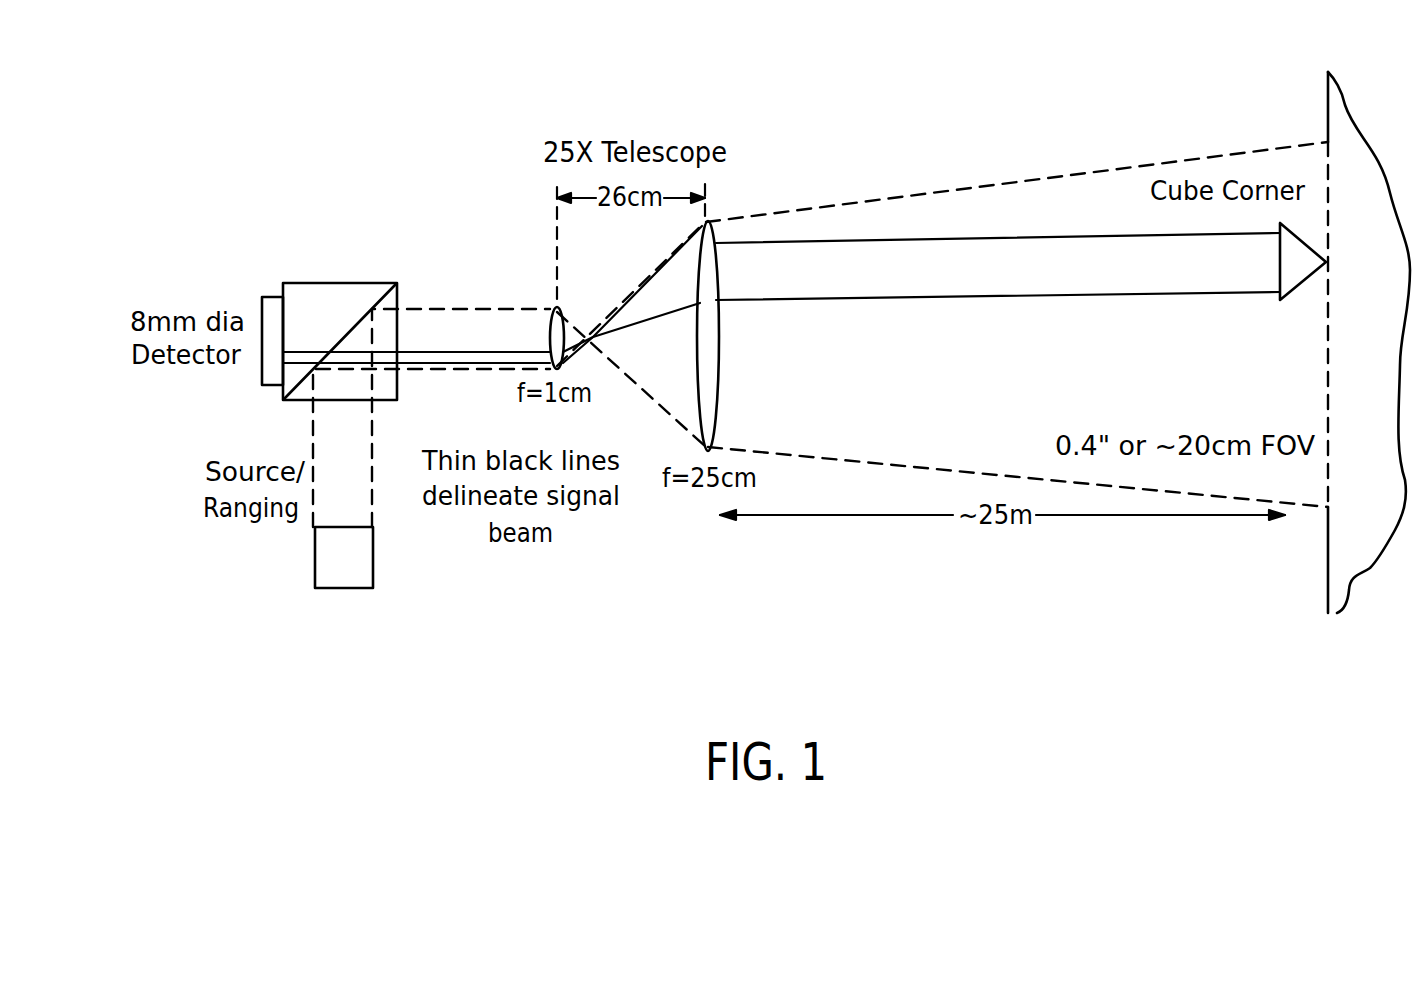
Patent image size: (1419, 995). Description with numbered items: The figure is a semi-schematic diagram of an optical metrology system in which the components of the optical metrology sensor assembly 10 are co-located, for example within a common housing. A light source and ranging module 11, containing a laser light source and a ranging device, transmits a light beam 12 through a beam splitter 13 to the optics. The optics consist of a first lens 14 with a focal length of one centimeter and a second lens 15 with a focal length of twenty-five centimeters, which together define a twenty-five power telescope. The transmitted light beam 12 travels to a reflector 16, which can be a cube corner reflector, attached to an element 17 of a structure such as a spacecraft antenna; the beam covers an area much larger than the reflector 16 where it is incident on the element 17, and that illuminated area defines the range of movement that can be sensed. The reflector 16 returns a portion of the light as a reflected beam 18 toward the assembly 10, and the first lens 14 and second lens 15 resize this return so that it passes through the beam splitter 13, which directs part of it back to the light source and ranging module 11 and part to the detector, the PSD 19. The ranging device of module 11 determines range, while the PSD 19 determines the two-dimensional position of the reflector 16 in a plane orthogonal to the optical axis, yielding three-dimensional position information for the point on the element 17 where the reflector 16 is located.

The optical metrology sensor assembly 10 is at (395, 128).
The light source and ranging module 11 is at (373, 572).
The light beam 12 is at (355, 423).
The beam splitter 13 is at (370, 283).
The first lens 14 is at (560, 306).
The second lens 15 is at (720, 394).
The reflector 16 is at (1297, 300).
The element 17 is at (1328, 568).
The reflected beam 18 is at (313, 352).
The PSD 19 is at (262, 300).